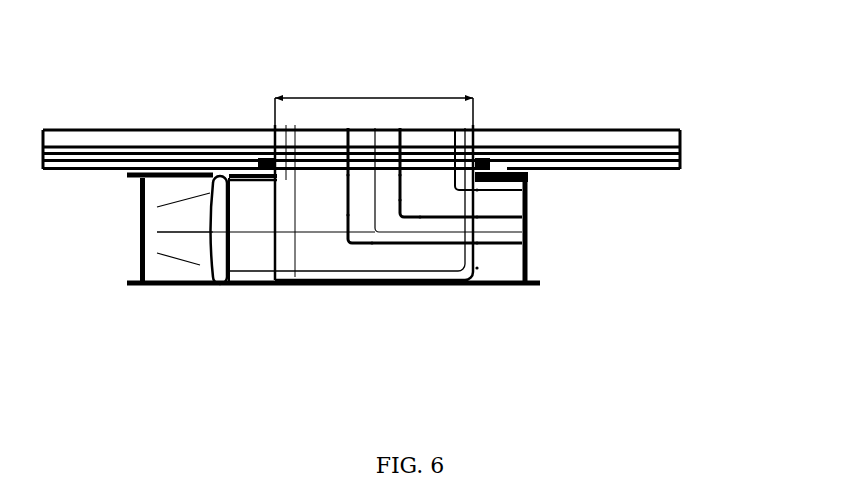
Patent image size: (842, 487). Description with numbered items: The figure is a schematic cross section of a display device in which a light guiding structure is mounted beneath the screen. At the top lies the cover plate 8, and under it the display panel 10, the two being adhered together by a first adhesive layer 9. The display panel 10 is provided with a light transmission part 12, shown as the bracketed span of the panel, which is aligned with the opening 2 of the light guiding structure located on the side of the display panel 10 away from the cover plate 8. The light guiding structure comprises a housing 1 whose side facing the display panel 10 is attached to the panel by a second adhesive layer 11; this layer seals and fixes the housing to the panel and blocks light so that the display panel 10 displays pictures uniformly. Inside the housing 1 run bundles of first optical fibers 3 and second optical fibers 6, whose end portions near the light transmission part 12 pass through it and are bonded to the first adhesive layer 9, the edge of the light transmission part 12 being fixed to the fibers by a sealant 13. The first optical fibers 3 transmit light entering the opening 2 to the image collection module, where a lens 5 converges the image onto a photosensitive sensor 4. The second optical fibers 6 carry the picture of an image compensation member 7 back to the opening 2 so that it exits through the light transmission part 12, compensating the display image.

The housing 1 is at (540, 178).
The opening 2 is at (330, 157).
The first optical fiber 3 is at (278, 270).
The photosensitive sensor 4 is at (140, 242).
The lens 5 is at (212, 243).
The second optical fiber 6 is at (513, 270).
The image compensation member 7 is at (555, 248).
The cover plate 8 is at (680, 129).
The first adhesive layer 9 is at (680, 145).
The display panel 10 is at (682, 155).
The second adhesive layer 11 is at (683, 166).
The light transmission part 12 is at (412, 72).
The sealant 13 is at (484, 158).